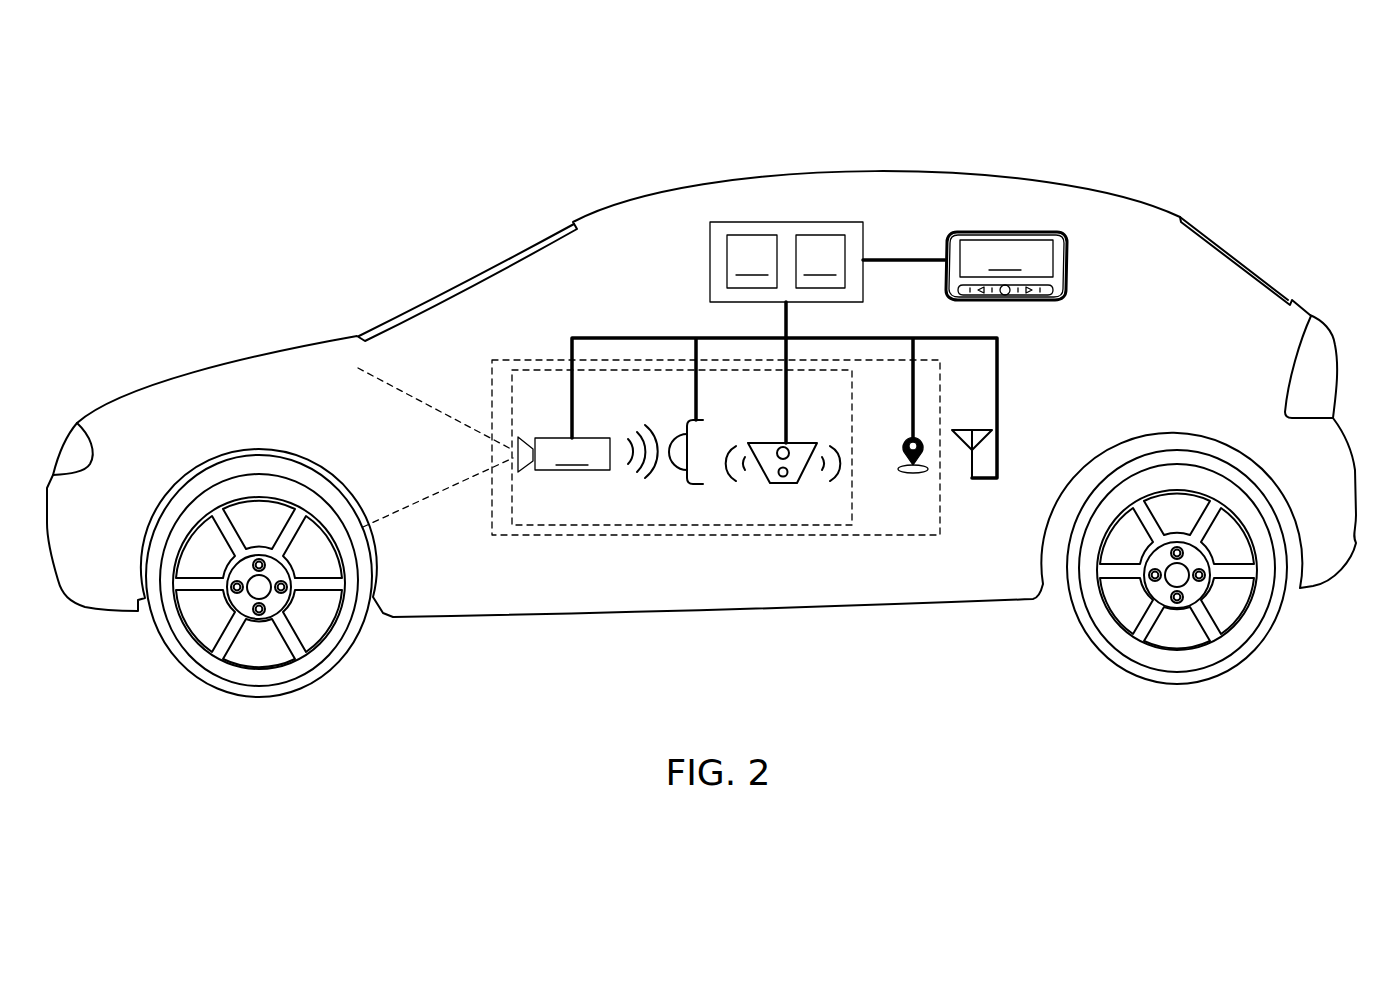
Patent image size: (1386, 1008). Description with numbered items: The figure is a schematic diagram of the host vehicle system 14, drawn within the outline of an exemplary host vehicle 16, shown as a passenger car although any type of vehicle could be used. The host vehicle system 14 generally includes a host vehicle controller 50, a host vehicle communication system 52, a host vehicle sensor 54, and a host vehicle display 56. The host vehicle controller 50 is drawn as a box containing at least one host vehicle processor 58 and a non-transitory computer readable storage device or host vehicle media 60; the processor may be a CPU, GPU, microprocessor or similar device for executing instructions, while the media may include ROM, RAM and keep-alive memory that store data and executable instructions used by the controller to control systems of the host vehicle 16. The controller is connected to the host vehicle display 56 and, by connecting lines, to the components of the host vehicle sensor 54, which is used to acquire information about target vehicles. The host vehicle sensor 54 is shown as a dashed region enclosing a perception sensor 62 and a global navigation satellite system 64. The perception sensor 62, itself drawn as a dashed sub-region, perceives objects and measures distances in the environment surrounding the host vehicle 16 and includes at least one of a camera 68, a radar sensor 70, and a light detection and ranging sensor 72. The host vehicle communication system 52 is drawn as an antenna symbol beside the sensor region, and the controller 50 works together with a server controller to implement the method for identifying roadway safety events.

The host vehicle system 14 is at (1150, 361).
The host vehicle 16 is at (1082, 185).
The host vehicle controller 50 is at (740, 262).
The host vehicle communication system 52 is at (953, 430).
The host vehicle sensor 54 is at (940, 523).
The host vehicle display 56 is at (1006, 266).
The host vehicle processor 58 is at (752, 261).
The host vehicle media 60 is at (820, 261).
The perception sensor 62 is at (853, 505).
The global navigation satellite system 64 is at (903, 451).
The camera 68 is at (484, 447).
The radar sensor 70 is at (688, 482).
The light detection and ranging (LiDAR) sensor 72 is at (802, 443).